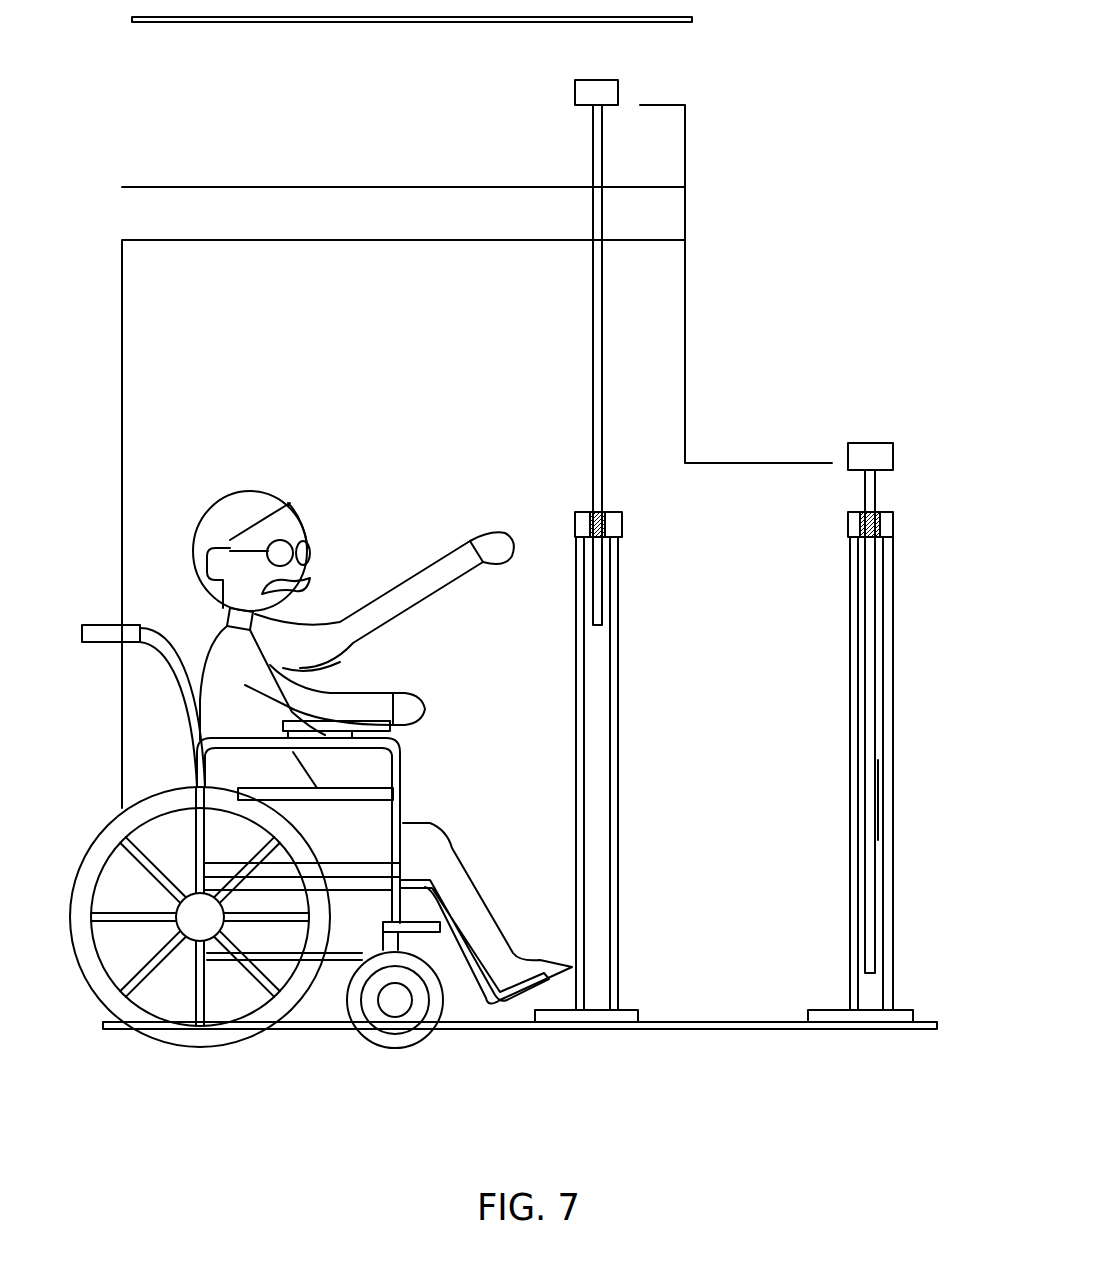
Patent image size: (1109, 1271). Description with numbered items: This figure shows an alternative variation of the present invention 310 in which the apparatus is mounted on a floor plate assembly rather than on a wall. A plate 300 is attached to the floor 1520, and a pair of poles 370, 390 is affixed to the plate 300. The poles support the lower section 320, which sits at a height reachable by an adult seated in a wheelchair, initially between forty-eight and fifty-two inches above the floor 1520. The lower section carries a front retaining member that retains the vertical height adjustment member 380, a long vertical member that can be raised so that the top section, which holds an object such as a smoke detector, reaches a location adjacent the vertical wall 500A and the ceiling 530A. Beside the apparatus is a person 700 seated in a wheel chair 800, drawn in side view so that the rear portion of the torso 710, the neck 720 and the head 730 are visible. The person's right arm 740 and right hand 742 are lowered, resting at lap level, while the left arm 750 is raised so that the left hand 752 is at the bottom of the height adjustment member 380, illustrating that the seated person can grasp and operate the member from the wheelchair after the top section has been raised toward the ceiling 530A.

The ceiling 530A is at (360, 24).
The vertical height adjustment member 380 is at (592, 338).
The alternative variation of the present invention 310 is at (875, 731).
The lower section 320 is at (829, 773).
The pole 370 is at (848, 697).
The pole 390 is at (895, 725).
The vertical wall 500A is at (835, 797).
The plate 300 is at (820, 1008).
The floor 1520 is at (714, 1021).
The person 700 is at (343, 685).
The head 730 is at (224, 493).
The neck 720 is at (316, 596).
The torso 710 is at (225, 630).
The left arm 750 is at (415, 578).
The left hand 752 is at (500, 535).
The right arm 740 is at (315, 705).
The right hand 742 is at (418, 718).
The wheel chair 800 is at (185, 780).